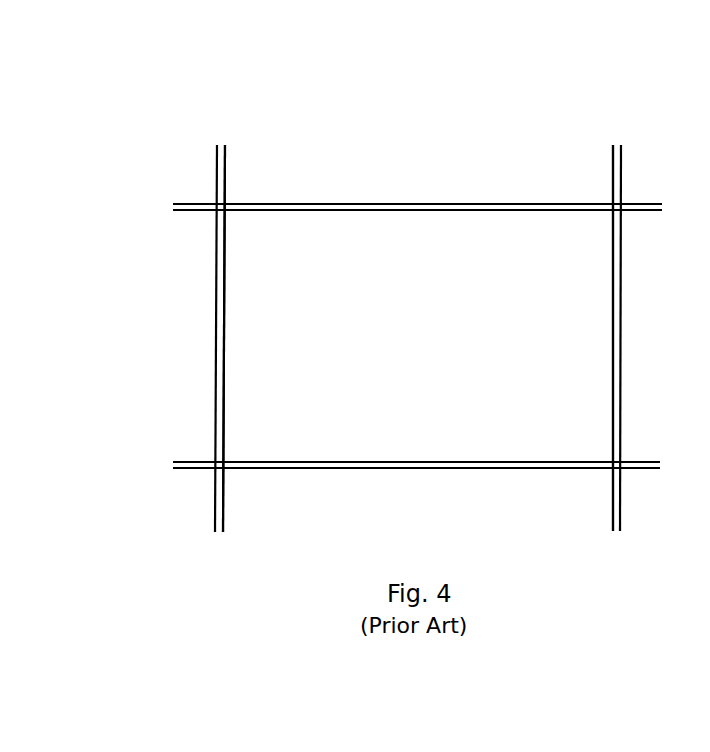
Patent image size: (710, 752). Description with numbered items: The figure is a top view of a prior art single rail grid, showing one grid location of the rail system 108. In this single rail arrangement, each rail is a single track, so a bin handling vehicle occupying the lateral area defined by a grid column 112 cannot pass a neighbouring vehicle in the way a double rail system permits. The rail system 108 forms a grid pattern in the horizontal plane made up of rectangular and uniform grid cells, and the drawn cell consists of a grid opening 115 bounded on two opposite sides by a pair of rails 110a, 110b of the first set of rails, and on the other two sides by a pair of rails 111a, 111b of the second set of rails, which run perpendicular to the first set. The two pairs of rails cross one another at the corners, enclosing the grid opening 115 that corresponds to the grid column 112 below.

The rail system 108 is at (322, 172).
The grid column 112 is at (473, 206).
The rail of the first set of rails 110a is at (318, 211).
The rail of the first set of rails 110b is at (460, 461).
The rail of the second set of rails 111a is at (245, 384).
The rail of the second set of rails 111b is at (612, 291).
The grid opening 115 is at (438, 348).